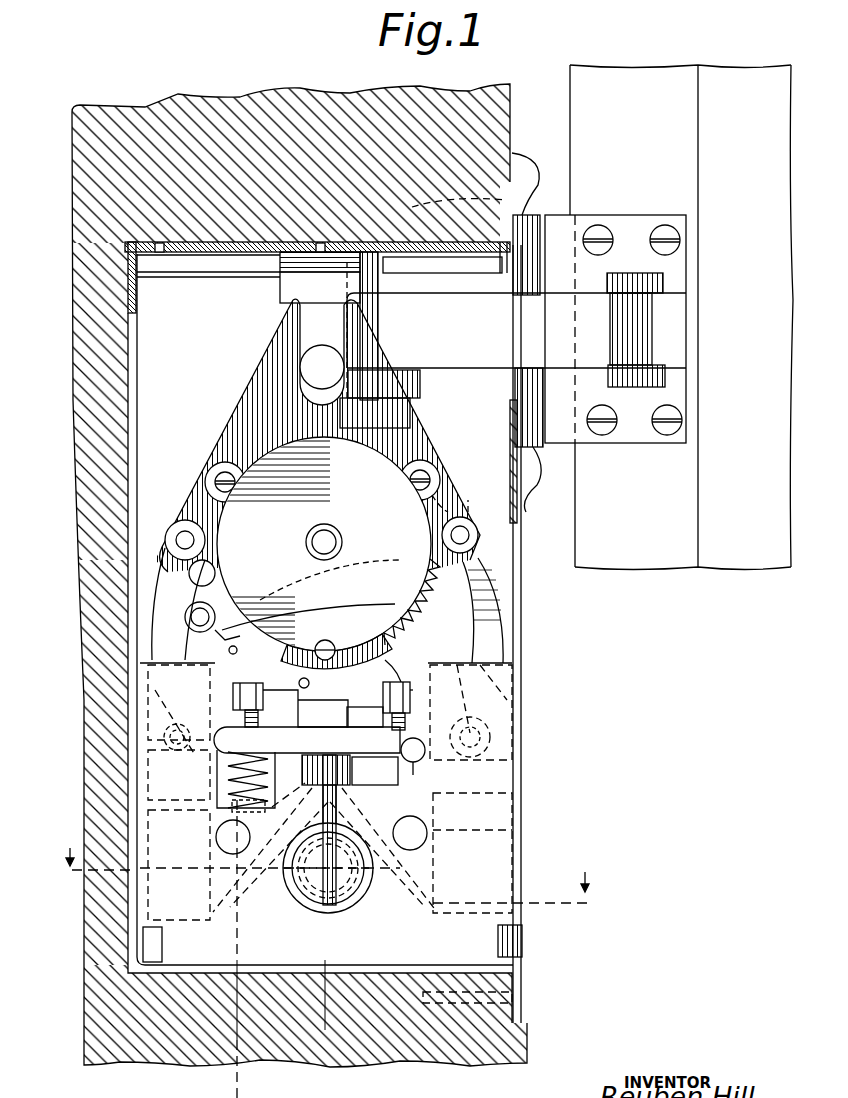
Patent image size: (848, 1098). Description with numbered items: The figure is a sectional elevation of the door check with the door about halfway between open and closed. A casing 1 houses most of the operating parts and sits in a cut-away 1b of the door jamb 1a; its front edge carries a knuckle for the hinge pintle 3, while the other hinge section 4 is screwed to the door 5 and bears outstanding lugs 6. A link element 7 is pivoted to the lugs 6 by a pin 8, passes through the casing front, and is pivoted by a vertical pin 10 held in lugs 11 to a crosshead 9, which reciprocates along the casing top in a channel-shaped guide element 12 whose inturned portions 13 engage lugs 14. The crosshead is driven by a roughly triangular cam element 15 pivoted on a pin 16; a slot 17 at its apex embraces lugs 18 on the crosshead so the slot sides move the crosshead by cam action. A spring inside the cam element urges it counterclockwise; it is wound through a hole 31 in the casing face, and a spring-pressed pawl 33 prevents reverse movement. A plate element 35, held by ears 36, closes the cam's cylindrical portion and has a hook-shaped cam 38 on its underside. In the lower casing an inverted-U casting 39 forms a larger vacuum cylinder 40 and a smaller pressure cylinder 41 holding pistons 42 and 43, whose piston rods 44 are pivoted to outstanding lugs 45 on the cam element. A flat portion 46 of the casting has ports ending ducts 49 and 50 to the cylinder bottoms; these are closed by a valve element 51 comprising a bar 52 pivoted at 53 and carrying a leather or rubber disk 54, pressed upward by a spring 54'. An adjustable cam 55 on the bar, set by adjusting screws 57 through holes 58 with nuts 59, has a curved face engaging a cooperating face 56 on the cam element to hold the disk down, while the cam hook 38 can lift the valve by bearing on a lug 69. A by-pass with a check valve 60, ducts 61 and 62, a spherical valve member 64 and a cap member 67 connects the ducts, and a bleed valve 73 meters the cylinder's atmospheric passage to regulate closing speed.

The casing 1 is at (522, 598).
The door jamb 1a is at (70, 178).
The cut-away portion of the door jamb 1b is at (127, 266).
The hinge pintle 3 is at (518, 160).
The hinge section 4 is at (547, 222).
The door 5 is at (718, 70).
The outstanding lugs 6 is at (630, 272).
The link element 7 is at (575, 355).
The pin 8 is at (328, 949).
The crosshead 9 is at (278, 288).
The vertically positioned pin 10 is at (363, 282).
The lugs on the crosshead 11 is at (386, 268).
The channel shaped guide element 12 is at (195, 254).
The inturned portions 13 is at (218, 278).
The lugs on the crosshead 14 is at (280, 263).
The cam element 15 is at (236, 405).
The pin 16 is at (340, 534).
The slotted portion 17 is at (360, 272).
The lugs 18 is at (312, 365).
The hole 31 is at (200, 594).
The spring pressed pawl 33 is at (236, 628).
The plate element 35 is at (448, 505).
The ears 36 is at (218, 472).
The hook shaped cam 38 is at (232, 652).
The casting 39 is at (410, 920).
The cylinder 40 is at (508, 698).
The cylinder 41 is at (142, 700).
The piston 42 is at (503, 815).
The piston 43 is at (140, 802).
The piston rods 44 is at (165, 617).
The outstanding lugs 45 is at (178, 530).
The flat portion 46 is at (352, 780).
The duct 49 is at (325, 847).
The duct 50 is at (322, 830).
The valve element 51 is at (356, 760).
The bar 52 is at (380, 740).
The pivot 53 is at (304, 758).
The disk 54 is at (267, 780).
The spring 54' is at (220, 781).
The adjustable cam 55 is at (392, 662).
The cooperating face 56 is at (397, 640).
The adjusting screws 57 is at (262, 723).
The holes 58 is at (407, 690).
The nuts 59 is at (372, 712).
The check valve 60 is at (320, 903).
The duct 61 is at (380, 872).
The duct 62 is at (321, 861).
The spherical valve member 64 is at (357, 908).
The cap member 67 is at (305, 890).
The lug 69 is at (307, 692).
The bleed valve 73 is at (522, 952).